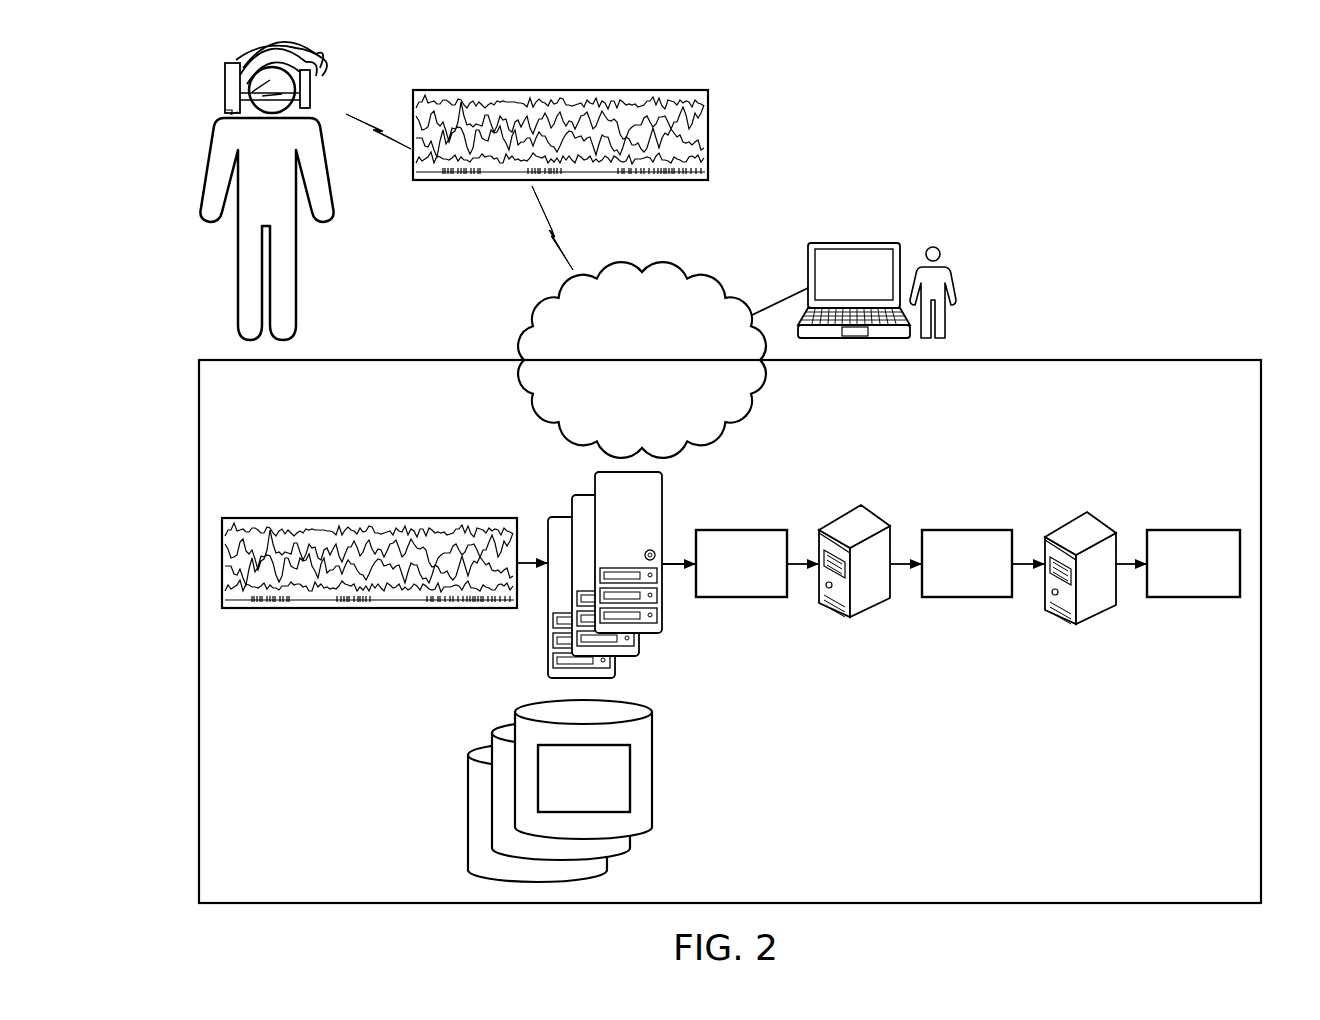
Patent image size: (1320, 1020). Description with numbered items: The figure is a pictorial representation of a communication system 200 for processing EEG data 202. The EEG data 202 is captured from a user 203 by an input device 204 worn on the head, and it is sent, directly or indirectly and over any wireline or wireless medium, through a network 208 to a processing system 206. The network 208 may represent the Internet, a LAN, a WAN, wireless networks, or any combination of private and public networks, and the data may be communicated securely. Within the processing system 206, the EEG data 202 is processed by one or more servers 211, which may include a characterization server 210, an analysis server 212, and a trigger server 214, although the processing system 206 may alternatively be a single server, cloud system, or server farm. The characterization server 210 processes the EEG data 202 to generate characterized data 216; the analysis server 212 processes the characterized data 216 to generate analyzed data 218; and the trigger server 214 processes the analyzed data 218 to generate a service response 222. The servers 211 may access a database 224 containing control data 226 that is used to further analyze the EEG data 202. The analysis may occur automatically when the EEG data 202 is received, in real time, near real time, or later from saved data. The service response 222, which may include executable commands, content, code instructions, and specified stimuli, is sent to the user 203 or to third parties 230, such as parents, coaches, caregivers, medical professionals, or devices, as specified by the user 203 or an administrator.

The communication system 200 is at (1145, 170).
The EEG data 202 is at (708, 135).
The user 203 is at (208, 168).
The input device 204 is at (225, 85).
The processing system 206 is at (977, 758).
The network 208 is at (620, 394).
The characterization server 210 is at (663, 508).
The servers 211 is at (556, 473).
The analysis server 212 is at (875, 518).
The trigger server 214 is at (1096, 526).
The characterized data 216 is at (720, 580).
The analyzed data 218 is at (946, 580).
The service response 222 is at (1172, 580).
The database 224 is at (653, 767).
The control data 226 is at (563, 794).
The third parties 230 is at (857, 242).